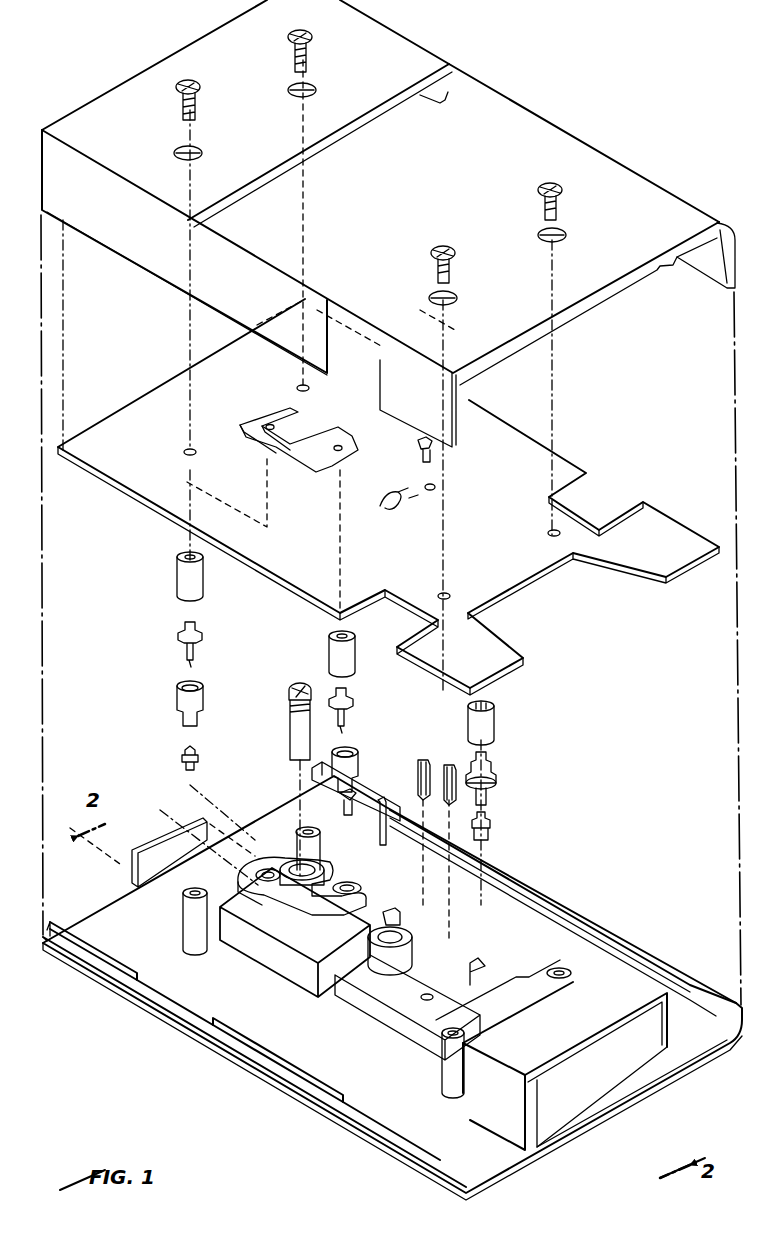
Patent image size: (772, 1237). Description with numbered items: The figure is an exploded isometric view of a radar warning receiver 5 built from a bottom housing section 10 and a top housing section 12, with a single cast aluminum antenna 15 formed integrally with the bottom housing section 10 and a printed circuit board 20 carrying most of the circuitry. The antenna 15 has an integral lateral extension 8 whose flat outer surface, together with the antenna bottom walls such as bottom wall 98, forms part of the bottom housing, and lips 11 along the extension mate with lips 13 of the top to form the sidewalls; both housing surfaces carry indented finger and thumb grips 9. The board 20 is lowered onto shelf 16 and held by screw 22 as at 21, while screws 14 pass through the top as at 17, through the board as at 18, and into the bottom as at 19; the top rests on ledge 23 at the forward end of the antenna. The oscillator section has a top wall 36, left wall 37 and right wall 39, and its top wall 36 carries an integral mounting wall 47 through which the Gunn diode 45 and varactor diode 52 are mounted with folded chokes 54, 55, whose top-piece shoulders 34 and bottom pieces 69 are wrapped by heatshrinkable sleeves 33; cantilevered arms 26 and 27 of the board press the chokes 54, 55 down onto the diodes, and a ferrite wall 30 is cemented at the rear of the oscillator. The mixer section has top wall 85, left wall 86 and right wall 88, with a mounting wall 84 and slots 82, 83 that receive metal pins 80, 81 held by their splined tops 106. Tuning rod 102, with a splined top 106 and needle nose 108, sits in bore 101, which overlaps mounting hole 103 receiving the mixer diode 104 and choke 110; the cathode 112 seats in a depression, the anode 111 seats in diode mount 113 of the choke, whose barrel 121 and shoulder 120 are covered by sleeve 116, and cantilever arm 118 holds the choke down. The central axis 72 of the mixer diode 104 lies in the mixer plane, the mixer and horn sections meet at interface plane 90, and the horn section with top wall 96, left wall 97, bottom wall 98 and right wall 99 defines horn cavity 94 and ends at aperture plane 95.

The radar warning receiver 5 is at (70, 1090).
The lateral extension 8 is at (130, 920).
The finger and thumb grips 9 is at (455, 84).
The bottom housing section 10 is at (275, 1108).
The lips 11 is at (112, 972).
The top housing section 12 is at (505, 130).
The lips 13 is at (152, 256).
The screws 14 is at (290, 60).
The antenna 15 is at (280, 1072).
The shelf 16 is at (530, 1012).
The screw holes in top housing 17 is at (290, 95).
The screw holes in board 18 is at (185, 450).
The screw receiving locations 19 is at (190, 915).
The printed circuit board 20 is at (648, 520).
The screw mounting location 21 is at (420, 932).
The screw 22 is at (418, 445).
The ledge 23 is at (640, 960).
The cantilevered arm 26 is at (300, 425).
The cantilevered arm 27 is at (320, 470).
The ferrite wall 30 is at (128, 853).
The heatshrinkable sleeves 33 is at (170, 574).
The shoulder 34 is at (172, 636).
The top wall 36 is at (318, 980).
The left wall 37 is at (270, 955).
The right wall 39 is at (398, 925).
The Gunn diode 45 is at (172, 760).
The mounting wall 47 is at (300, 910).
The varactor diode 52 is at (355, 800).
The folded choke 54 is at (173, 550).
The folded choke 55 is at (364, 625).
The bottom piece 69 is at (170, 708).
The central axis 72 is at (430, 975).
The metal pin 80 is at (422, 755).
The metal pin 81 is at (447, 755).
The slot 82 is at (440, 1050).
The slot 83 is at (560, 968).
The mounting wall 84 is at (355, 995).
The top wall 85 is at (360, 1035).
The left wall 86 is at (380, 1035).
The right wall 88 is at (480, 960).
The interface plane 90 is at (482, 992).
The horn cavity 94 is at (595, 1085).
The aperture plane 95 is at (655, 1090).
The top wall 96 is at (550, 1036).
The left wall 97 is at (490, 1090).
The bottom wall 98 is at (575, 1115).
The right wall 99 is at (680, 1050).
The bore 101 is at (375, 925).
The tuning rod 102 is at (392, 860).
The mounting hole 103 is at (505, 895).
The mixer diode 104 is at (502, 828).
The splined top 106 is at (456, 765).
The needle nose 108 is at (378, 830).
The choke 110 is at (505, 760).
The anode 111 is at (520, 808).
The cathode 112 is at (505, 845).
The diode mount 113 is at (490, 790).
The heat shrinkable sleeve 116 is at (498, 716).
The cantilever arm 118 is at (405, 508).
The shoulder 120 is at (498, 775).
The barrel 121 is at (510, 775).